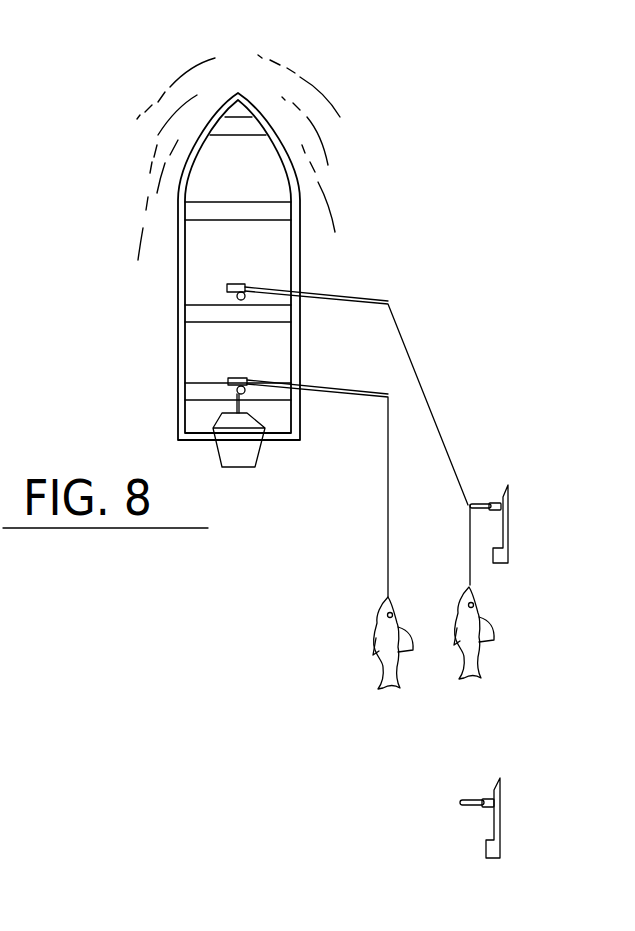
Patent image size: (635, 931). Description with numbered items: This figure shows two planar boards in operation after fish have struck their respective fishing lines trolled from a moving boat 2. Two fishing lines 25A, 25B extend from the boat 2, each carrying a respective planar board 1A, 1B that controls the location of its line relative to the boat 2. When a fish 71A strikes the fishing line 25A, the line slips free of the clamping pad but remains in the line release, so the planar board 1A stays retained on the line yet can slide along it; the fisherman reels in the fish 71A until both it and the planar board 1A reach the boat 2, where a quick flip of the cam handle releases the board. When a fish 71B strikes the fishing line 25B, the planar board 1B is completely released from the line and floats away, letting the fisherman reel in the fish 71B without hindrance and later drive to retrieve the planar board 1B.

The boat 2 is at (205, 358).
The fishing line 25A is at (433, 417).
The fishing line 25B is at (387, 525).
The planar board 1A is at (510, 531).
The planar board 1B is at (486, 849).
The fish 71A is at (474, 678).
The fish 71B is at (375, 655).